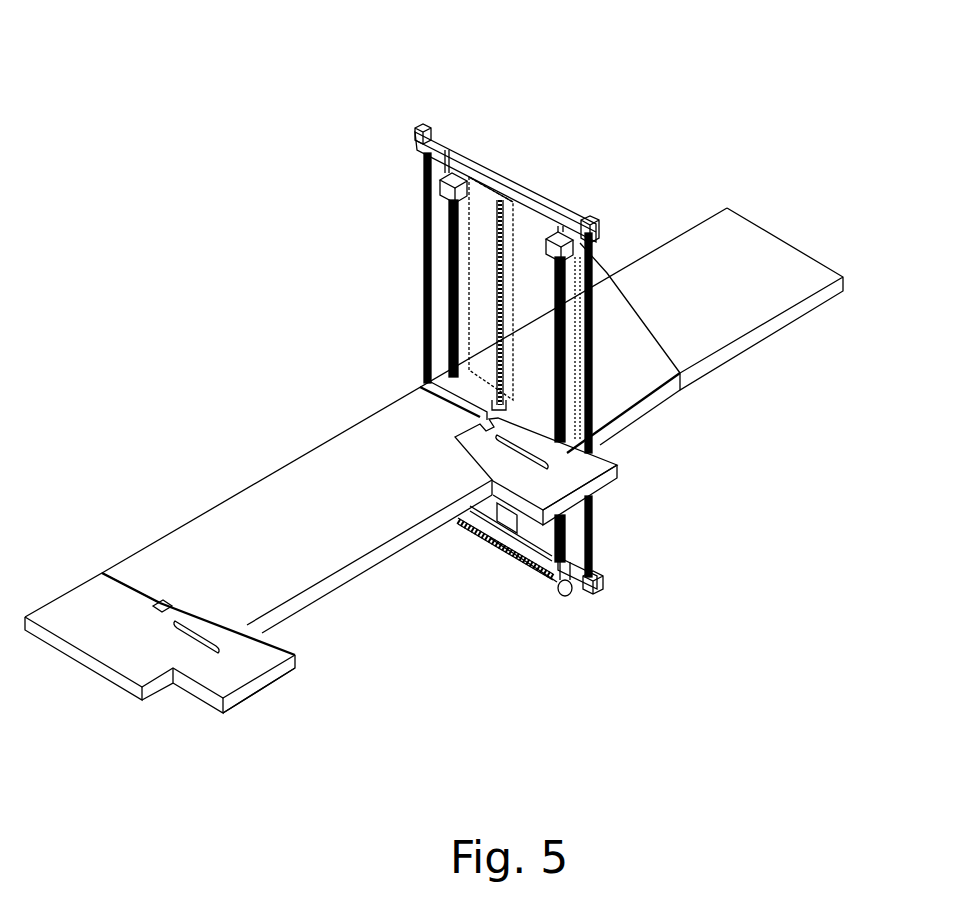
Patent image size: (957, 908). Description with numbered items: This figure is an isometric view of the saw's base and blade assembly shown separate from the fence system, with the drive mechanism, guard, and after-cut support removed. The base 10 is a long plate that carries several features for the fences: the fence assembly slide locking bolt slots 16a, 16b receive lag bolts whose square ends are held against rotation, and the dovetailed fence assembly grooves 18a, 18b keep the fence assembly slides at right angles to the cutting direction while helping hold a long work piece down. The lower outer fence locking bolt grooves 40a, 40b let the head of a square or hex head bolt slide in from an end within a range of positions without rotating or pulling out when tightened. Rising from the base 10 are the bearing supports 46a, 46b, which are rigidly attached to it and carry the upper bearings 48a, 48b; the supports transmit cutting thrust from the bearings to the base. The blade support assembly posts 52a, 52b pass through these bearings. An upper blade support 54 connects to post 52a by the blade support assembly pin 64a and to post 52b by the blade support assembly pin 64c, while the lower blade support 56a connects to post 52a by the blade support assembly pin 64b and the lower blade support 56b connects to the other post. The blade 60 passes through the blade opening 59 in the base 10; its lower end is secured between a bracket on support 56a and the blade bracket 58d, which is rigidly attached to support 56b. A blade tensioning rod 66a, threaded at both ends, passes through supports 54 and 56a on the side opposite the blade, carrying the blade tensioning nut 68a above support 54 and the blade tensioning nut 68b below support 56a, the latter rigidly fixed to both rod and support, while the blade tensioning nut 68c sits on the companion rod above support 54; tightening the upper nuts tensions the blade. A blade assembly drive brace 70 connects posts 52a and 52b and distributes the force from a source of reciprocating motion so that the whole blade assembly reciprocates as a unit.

The base 10 is at (753, 347).
The fence assembly slide locking bolt slot 16a is at (203, 642).
The fence assembly slide locking bolt slot 16b is at (553, 453).
The fence assembly groove 18a is at (260, 683).
The fence assembly groove 18b is at (603, 488).
The lower outer fence locking bolt groove 40a is at (104, 573).
The lower outer fence locking bolt groove 40b is at (422, 388).
The bearing support 46a is at (607, 272).
The bearing support 46b is at (478, 200).
The upper bearing 48a is at (557, 228).
The upper bearing 48b is at (440, 182).
The blade support assembly post 52a is at (562, 405).
The blade support assembly post 52b is at (455, 227).
The upper blade support 54 is at (473, 158).
The lower blade support 56a is at (597, 590).
The lower blade support 56b is at (478, 525).
The blade bracket 58d is at (485, 550).
The blade opening 59 is at (480, 422).
The blade 60 is at (497, 260).
The blade support assembly pin 64a is at (560, 230).
The blade support assembly pin 64b is at (570, 594).
The blade support assembly pin 64c is at (447, 172).
The blade tensioning rod 66a is at (593, 555).
The blade tensioning nut 68a is at (590, 222).
The blade tensioning nut 68b is at (590, 595).
The blade tensioning nut 68c is at (424, 133).
The blade assembly drive brace 70 is at (513, 560).